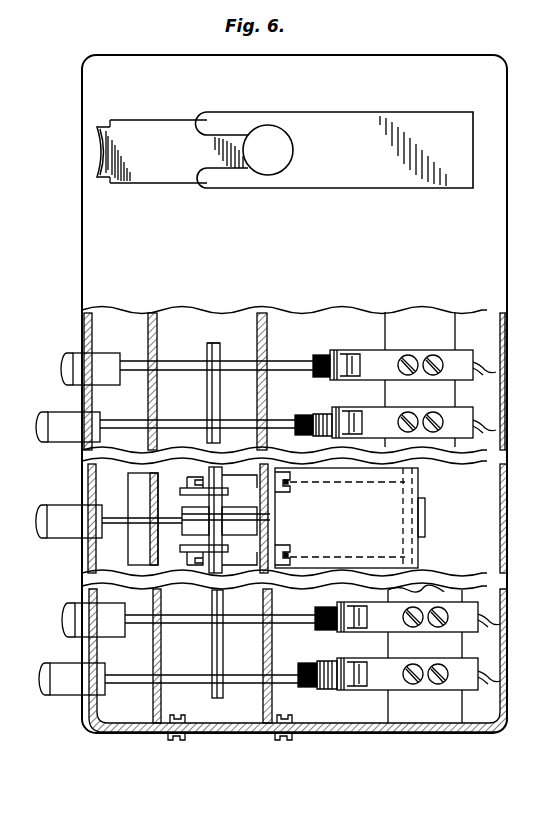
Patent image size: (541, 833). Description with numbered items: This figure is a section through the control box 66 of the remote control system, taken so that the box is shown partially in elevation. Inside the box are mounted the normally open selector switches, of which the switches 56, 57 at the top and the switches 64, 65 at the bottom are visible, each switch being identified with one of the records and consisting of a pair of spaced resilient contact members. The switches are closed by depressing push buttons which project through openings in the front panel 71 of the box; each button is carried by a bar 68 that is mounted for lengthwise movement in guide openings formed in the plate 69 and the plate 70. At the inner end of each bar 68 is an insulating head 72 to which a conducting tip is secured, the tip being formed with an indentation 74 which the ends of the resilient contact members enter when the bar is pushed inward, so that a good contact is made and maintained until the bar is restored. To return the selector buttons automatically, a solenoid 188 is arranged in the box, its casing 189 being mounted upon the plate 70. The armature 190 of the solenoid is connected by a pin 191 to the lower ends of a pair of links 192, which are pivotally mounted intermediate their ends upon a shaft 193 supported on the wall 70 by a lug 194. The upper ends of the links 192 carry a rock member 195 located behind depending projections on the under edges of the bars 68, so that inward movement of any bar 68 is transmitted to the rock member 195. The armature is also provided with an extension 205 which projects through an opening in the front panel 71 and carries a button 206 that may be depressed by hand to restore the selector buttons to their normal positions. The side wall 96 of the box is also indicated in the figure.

The control box 66 is at (80, 283).
The front panel 71 is at (84, 331).
The plate 69 is at (157, 327).
The plate 70 is at (267, 327).
The bar 68 is at (222, 372).
The insulating head 72 is at (312, 412).
The selector switch 56 is at (372, 352).
The selector switch 57 is at (366, 418).
The rock member 195 is at (210, 403).
The casing wall 96 is at (508, 463).
The button 206 is at (45, 525).
The extension 205 is at (118, 525).
The armature 190 is at (243, 521).
The shaft 193 is at (224, 572).
The lug 194 is at (247, 494).
The link 192 is at (183, 488).
The pin 191 is at (186, 567).
The solenoid 188 is at (395, 490).
The casing 189 is at (385, 510).
The indentation 74 is at (322, 682).
The selector switch 64 is at (380, 628).
The selector switch 65 is at (378, 688).